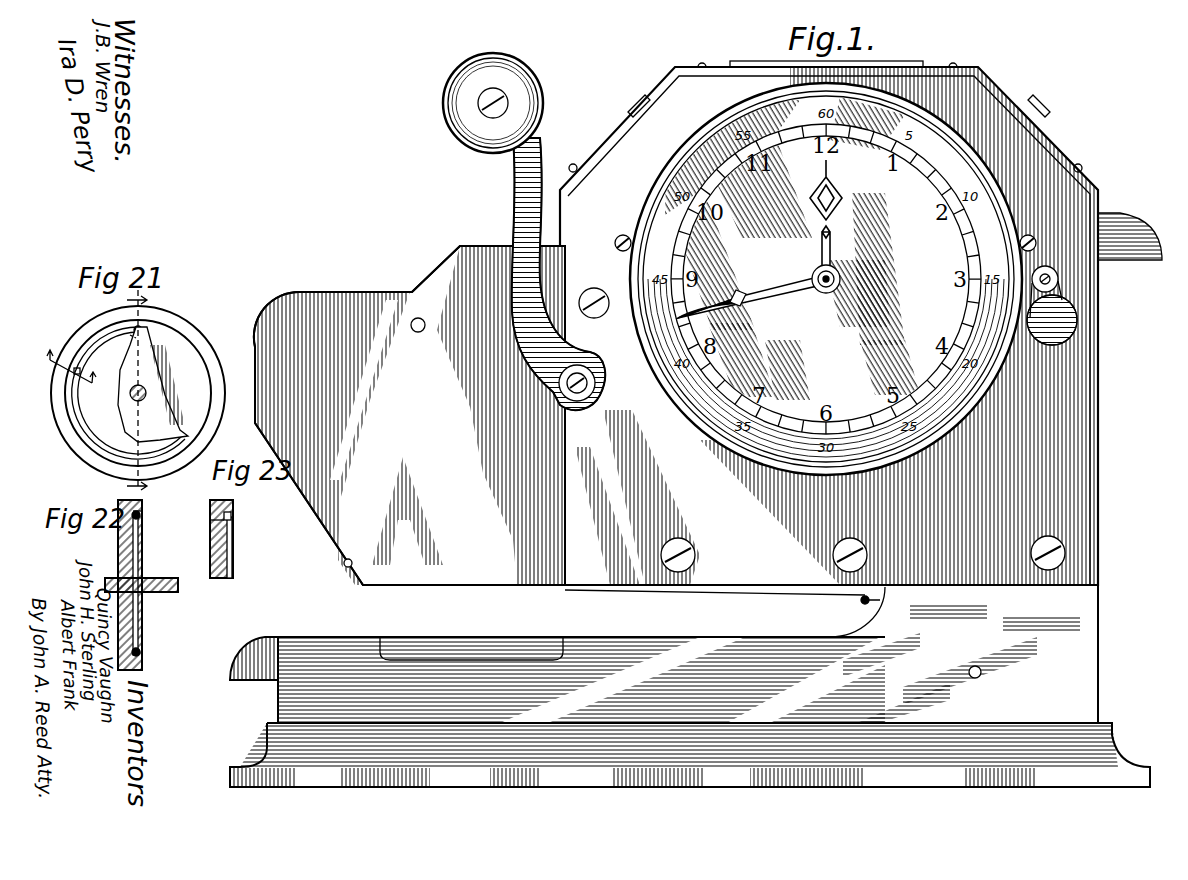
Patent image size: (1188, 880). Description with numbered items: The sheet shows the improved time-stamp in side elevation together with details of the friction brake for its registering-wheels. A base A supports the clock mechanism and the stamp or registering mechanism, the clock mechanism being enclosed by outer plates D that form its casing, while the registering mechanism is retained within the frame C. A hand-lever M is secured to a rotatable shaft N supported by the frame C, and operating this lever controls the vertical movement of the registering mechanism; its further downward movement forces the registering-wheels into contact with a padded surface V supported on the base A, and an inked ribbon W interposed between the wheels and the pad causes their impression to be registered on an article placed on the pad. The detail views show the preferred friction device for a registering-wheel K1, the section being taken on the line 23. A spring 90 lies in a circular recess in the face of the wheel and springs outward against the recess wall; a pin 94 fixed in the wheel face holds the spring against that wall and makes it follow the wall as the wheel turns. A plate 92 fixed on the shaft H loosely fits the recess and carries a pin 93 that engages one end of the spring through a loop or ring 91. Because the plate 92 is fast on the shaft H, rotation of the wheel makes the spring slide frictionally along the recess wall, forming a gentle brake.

In FIG. 1, the outer plates D is at (861, 323).
In FIG. 1, the frame C is at (409, 415).
In FIG. 1, the hand-lever M is at (545, 100).
In FIG. 1, the rotatable shaft N is at (572, 392).
In FIG. 1, the base A is at (690, 686).
In FIG. 1, the padded surface V is at (503, 640).
In FIG. 1, the inked ribbon W is at (707, 594).
In FIG. 21, the registering-wheel K1 is at (200, 342).
In FIG. 22, the registering-wheel K1 is at (142, 660).
In FIG. 23, the registering-wheel K1 is at (222, 578).
In FIG. 21, the spring 90 is at (95, 338).
In FIG. 22, the spring 90 is at (140, 650).
In FIG. 23, the spring 90 is at (231, 515).
In FIG. 21, the loop or ring 91 is at (130, 335).
In FIG. 22, the loop or ring 91 is at (141, 511).
In FIG. 21, the plate 92 is at (175, 385).
In FIG. 22, the plate 92 is at (138, 548).
In FIG. 23, the plate 92 is at (232, 548).
In FIG. 21, the pin 93 is at (141, 332).
In FIG. 22, the pin 93 is at (140, 517).
In FIG. 21, the pin 94 is at (80, 373).
In FIG. 23, the pin 94 is at (215, 522).
In FIG. 21, the shaft H is at (142, 398).
In FIG. 22, the shaft H is at (162, 592).
In FIG. 21, the section line 23 is at (89, 390).